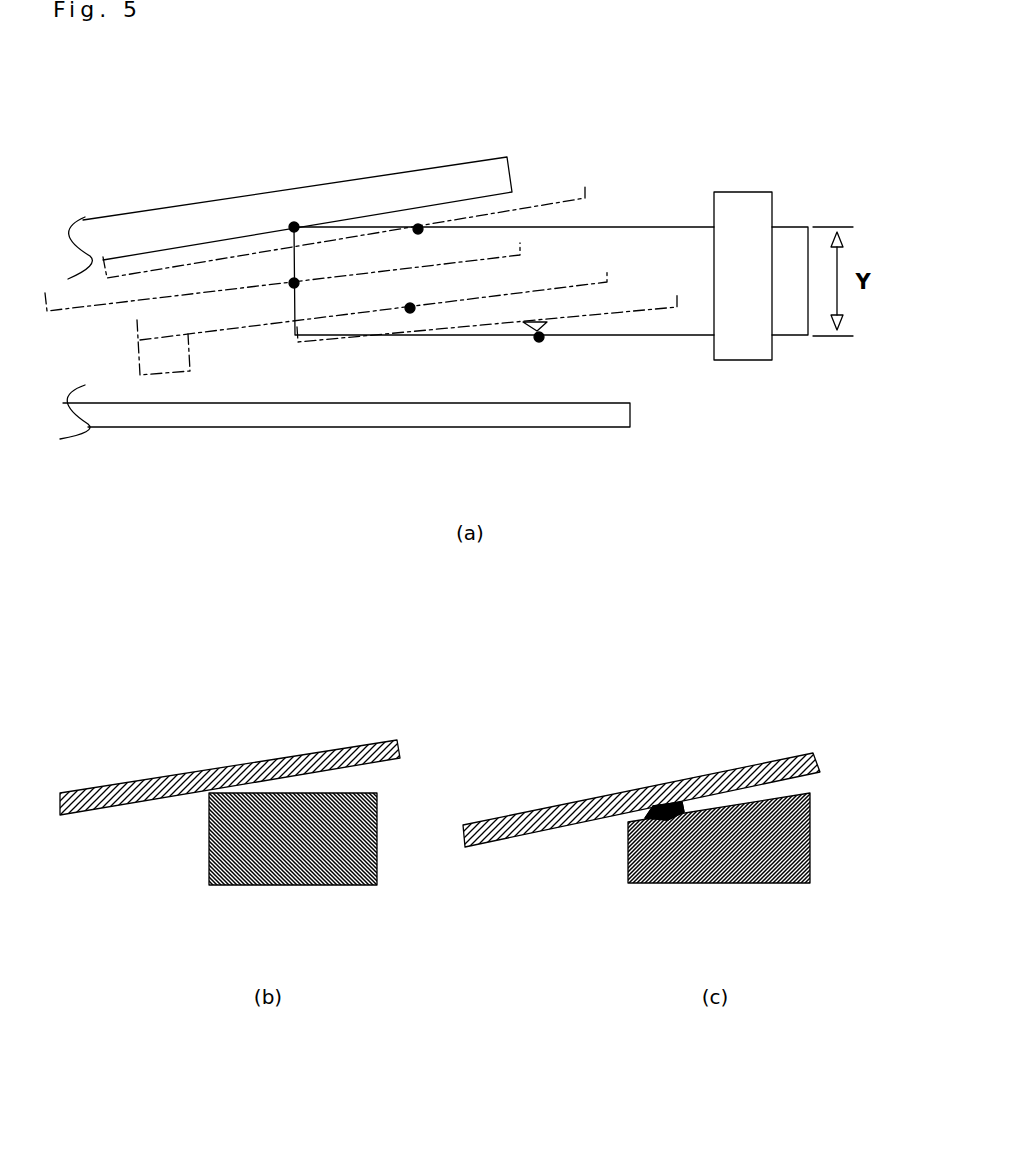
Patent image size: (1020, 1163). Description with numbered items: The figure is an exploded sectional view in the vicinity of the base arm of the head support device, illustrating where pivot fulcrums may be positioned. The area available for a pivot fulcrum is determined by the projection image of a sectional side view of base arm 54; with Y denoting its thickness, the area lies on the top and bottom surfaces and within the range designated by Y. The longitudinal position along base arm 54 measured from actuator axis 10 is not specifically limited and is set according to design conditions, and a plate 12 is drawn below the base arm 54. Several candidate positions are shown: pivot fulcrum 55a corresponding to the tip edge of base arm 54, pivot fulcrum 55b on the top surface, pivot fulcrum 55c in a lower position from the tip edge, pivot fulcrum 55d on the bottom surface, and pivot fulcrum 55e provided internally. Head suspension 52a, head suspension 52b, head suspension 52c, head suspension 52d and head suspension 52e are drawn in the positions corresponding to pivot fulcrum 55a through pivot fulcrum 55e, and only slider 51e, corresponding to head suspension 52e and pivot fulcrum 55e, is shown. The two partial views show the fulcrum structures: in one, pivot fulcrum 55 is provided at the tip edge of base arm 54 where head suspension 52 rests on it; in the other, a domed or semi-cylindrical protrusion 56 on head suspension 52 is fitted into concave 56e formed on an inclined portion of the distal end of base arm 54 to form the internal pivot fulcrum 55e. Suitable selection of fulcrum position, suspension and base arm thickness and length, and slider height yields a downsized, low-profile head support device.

The actuator axis 10 is at (748, 212).
The frame plate 12 is at (335, 418).
The slider 51e is at (140, 355).
The head suspension 52 is at (175, 782).
The head suspension 52a is at (392, 193).
The head suspension 52b is at (585, 190).
The head suspension 52c is at (520, 237).
The head suspension 52d is at (620, 317).
The head suspension 52e is at (607, 273).
The base arm 54 is at (662, 245).
The pivot fulcrum 55 is at (210, 790).
The pivot fulcrum 55a is at (299, 213).
The pivot fulcrum 55b is at (432, 243).
The pivot fulcrum 55c is at (315, 295).
The pivot fulcrum 55d is at (556, 345).
The pivot fulcrum 55e is at (637, 920).
The protrusion 56 is at (667, 810).
The concave 56e is at (650, 825).